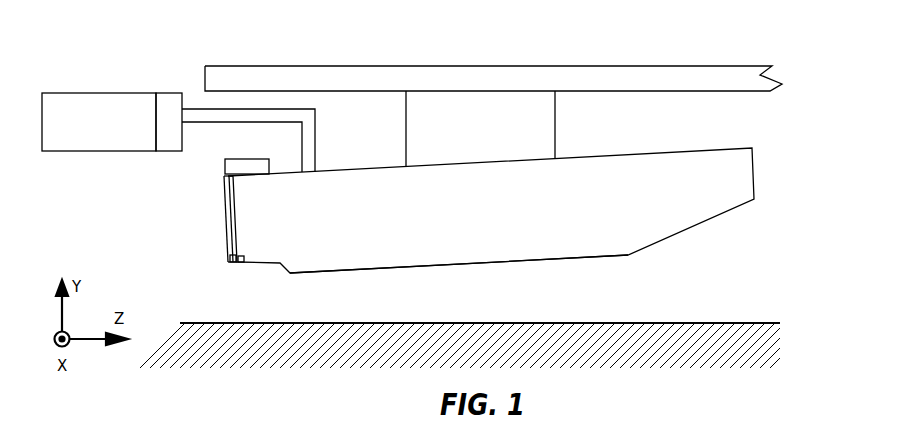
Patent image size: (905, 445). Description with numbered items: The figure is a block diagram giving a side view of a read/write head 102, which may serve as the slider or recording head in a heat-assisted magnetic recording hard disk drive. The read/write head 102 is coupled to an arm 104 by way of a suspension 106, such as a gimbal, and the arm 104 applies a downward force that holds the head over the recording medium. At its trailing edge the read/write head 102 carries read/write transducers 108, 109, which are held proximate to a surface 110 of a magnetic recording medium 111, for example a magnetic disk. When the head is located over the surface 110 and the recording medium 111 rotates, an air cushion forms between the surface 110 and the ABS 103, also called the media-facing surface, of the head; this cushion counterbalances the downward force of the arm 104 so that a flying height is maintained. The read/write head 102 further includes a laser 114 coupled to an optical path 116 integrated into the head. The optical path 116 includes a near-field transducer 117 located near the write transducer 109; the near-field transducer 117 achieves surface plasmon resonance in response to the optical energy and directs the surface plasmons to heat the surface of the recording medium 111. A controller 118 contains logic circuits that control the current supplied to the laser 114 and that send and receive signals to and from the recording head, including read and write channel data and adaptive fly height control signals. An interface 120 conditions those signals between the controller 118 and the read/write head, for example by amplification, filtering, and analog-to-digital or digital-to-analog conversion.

The read/write head 102 is at (688, 152).
The ABS 103 is at (507, 262).
The arm 104 is at (672, 76).
The suspension 106 is at (556, 148).
The read/write transducer 108 is at (241, 263).
The write transducer 109 is at (230, 254).
The surface 110 is at (762, 322).
The magnetic recording medium 111 is at (636, 369).
The laser 114 is at (224, 166).
The optical path 116 is at (230, 220).
The near-field transducer 117 is at (232, 263).
The controller 118 is at (78, 100).
The interface 120 is at (162, 97).